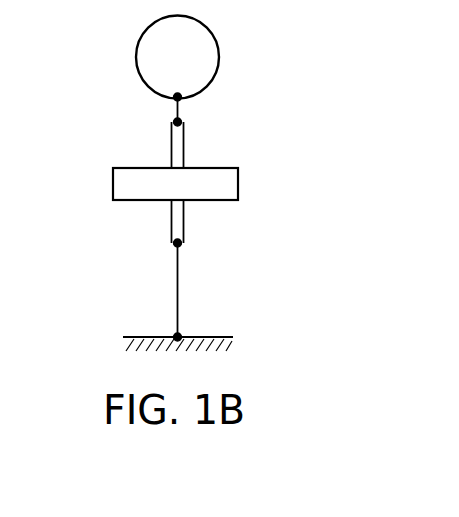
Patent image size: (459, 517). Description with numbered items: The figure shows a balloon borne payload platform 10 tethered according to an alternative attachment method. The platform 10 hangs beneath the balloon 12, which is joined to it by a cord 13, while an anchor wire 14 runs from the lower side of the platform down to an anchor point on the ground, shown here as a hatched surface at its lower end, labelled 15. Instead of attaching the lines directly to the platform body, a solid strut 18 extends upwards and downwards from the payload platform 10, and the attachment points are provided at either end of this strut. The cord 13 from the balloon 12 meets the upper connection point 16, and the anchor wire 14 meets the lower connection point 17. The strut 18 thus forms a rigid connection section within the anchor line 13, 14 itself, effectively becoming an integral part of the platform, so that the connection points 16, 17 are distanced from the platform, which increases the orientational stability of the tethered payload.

The payload platform 10 is at (113, 186).
The balloon 12 is at (136, 61).
The cord 13 is at (179, 112).
The anchor wire 14 is at (176, 292).
The fixed pivot point 15 is at (176, 336).
The connection point 16 is at (176, 119).
The connection point 17 is at (173, 245).
The solid strut 18 is at (171, 146).